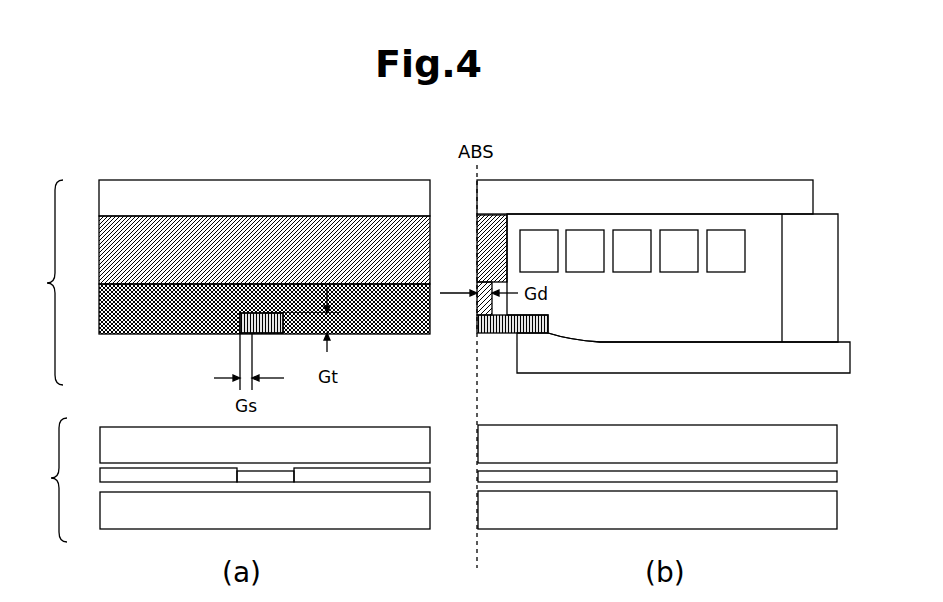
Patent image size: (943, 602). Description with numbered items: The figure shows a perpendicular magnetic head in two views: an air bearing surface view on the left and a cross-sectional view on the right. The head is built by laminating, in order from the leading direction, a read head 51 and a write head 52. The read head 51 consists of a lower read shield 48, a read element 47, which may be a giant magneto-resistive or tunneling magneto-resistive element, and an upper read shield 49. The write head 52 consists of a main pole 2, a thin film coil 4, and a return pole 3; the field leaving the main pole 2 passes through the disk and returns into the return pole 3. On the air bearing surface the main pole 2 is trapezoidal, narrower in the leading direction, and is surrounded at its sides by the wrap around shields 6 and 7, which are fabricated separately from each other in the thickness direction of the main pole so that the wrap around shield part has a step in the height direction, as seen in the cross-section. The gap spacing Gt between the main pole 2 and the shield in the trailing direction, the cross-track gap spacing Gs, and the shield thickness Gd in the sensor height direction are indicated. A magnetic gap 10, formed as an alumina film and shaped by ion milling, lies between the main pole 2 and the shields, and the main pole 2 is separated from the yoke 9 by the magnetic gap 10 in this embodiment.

The main pole 2 is at (270, 338).
The return pole 3 is at (208, 188).
The thin film coil 4 is at (690, 262).
The wrap around shield 6 is at (100, 308).
The wrap around shield 7 is at (104, 240).
The yoke 9 is at (706, 363).
The magnetic gap 10 is at (237, 337).
The read element 47 is at (262, 480).
The lower read shield 48 is at (143, 515).
The upper read shield 49 is at (156, 442).
The read head 51 is at (42, 480).
The write head 52 is at (39, 282).